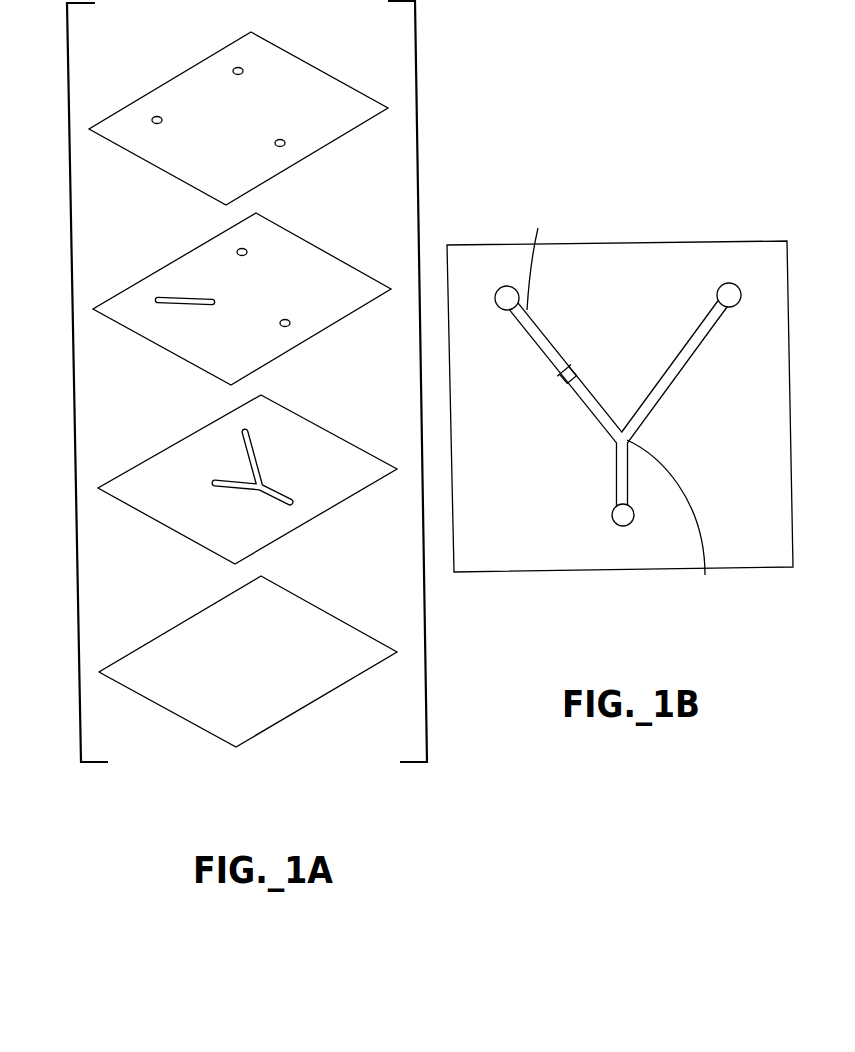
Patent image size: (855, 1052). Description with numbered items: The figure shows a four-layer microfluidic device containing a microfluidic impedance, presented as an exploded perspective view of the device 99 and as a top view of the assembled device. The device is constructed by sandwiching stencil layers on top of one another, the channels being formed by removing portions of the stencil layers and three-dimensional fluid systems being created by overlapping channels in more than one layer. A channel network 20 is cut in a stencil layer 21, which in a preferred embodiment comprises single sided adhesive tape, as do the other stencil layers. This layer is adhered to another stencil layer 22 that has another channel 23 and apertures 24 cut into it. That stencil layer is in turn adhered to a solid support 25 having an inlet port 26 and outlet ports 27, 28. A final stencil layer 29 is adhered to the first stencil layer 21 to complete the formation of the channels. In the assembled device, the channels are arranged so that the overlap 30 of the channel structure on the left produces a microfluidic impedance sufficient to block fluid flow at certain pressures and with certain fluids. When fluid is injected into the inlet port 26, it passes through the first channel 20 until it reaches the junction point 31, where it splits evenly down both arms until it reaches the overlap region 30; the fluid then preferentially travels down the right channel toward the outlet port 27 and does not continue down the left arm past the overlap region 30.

In FIG. 1A, the layered microfluidic device assembly 99 is at (72, 373).
In FIG. 1A, the solid support 25 is at (273, 178).
In FIG. 1A, the outlet port 27 is at (234, 68).
In FIG. 1B, the outlet port 27 is at (729, 283).
In FIG. 1A, the outlet port 28 is at (155, 117).
In FIG. 1B, the outlet port 28 is at (507, 286).
In FIG. 1A, the inlet port 26 is at (286, 142).
In FIG. 1B, the inlet port 26 is at (633, 518).
In FIG. 1A, the stencil layer 22 is at (277, 360).
In FIG. 1A, the apertures 24 is at (237, 248).
In FIG. 1A, the channel 23 is at (185, 306).
In FIG. 1B, the channel 23 is at (564, 322).
In FIG. 1A, the stencil layer 21 is at (308, 522).
In FIG. 1A, the channel network 20 is at (262, 470).
In FIG. 1B, the channel network 20 is at (617, 475).
In FIG. 1A, the final stencil layer 29 is at (293, 715).
In FIG. 1B, the overlap region 30 is at (568, 365).
In FIG. 1B, the junction point 31 is at (675, 452).